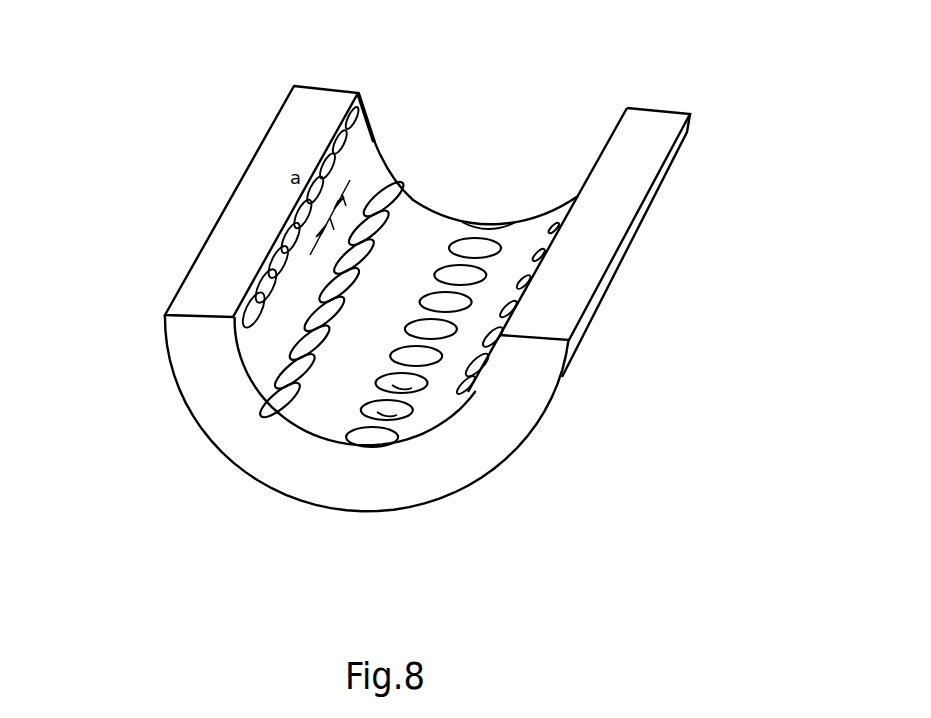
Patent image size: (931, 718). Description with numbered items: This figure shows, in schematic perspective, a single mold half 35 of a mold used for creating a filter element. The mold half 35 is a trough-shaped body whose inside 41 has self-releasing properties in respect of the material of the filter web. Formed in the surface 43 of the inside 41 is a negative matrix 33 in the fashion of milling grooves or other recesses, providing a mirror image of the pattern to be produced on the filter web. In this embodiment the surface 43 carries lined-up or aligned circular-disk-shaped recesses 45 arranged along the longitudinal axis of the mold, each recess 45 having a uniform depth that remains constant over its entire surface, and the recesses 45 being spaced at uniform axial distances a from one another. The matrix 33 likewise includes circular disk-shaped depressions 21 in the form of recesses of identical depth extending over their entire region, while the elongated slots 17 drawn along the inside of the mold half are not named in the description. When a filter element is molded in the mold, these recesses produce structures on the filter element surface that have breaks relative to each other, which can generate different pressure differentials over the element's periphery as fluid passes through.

The slots 17 is at (375, 288).
The circular disk-shaped depressions 21 is at (396, 199).
The negative matrix 33 is at (470, 327).
The mold half 35 is at (512, 424).
The inside 41 is at (310, 401).
The surface 43 is at (370, 138).
The recesses 45 is at (392, 410).